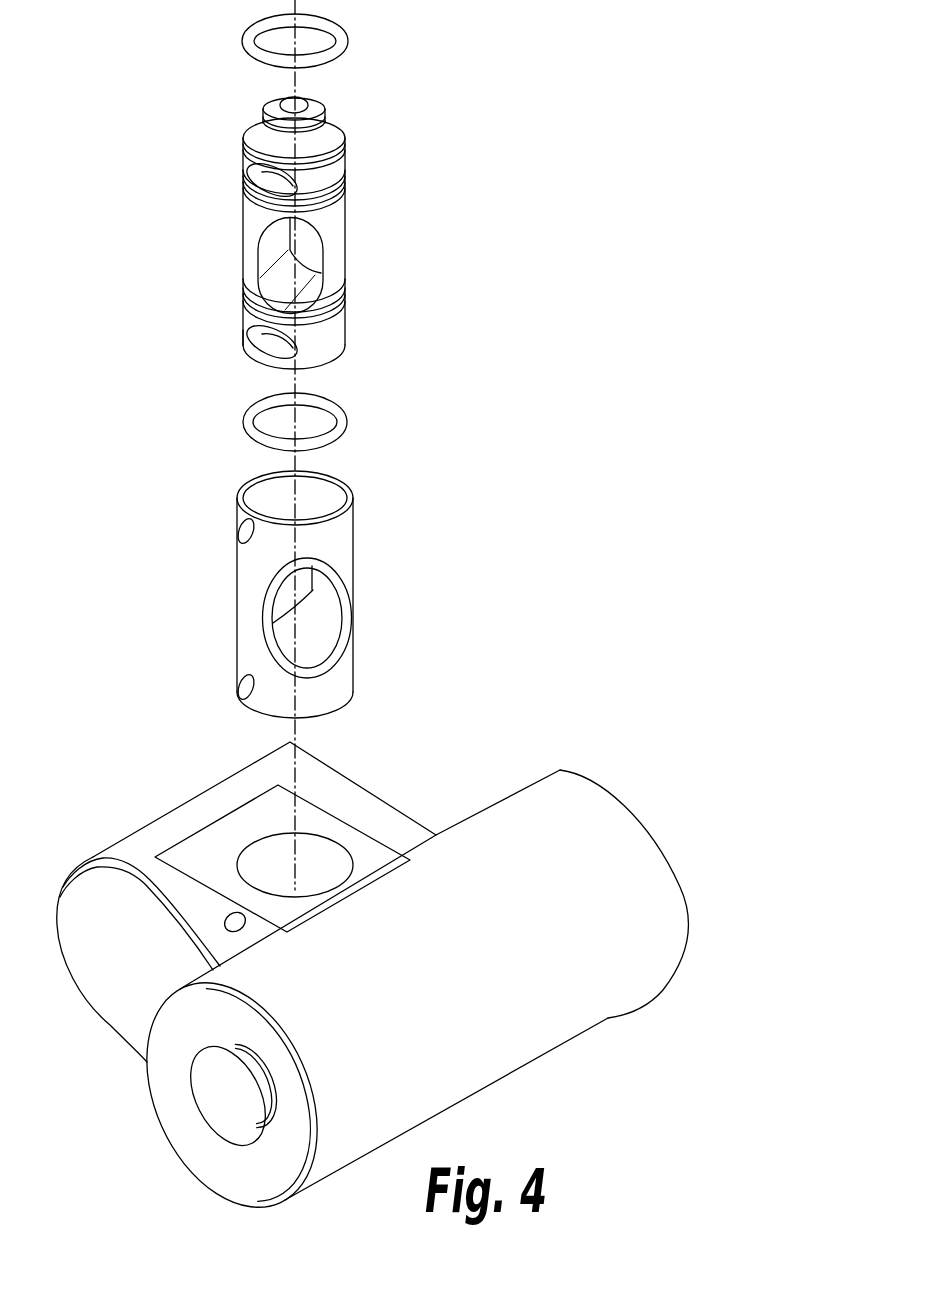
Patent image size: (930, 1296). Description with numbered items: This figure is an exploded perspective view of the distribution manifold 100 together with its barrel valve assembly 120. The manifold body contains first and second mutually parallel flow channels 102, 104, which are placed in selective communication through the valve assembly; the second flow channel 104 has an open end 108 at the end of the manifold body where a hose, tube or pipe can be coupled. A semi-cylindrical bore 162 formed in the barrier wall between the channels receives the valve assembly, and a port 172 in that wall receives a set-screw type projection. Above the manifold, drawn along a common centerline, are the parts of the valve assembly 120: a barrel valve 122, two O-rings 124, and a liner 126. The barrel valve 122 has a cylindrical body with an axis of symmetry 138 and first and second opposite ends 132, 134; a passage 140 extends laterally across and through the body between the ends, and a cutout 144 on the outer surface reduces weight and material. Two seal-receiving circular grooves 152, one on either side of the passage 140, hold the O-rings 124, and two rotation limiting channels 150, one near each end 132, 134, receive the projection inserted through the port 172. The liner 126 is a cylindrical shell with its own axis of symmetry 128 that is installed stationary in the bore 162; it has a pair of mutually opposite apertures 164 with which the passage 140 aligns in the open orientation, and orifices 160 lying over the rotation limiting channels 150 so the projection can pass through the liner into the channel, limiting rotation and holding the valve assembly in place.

The distribution manifold 100 is at (635, 790).
The first flow channel 102 is at (160, 817).
The second flow channel 104 is at (549, 1053).
The open end 108 is at (221, 1114).
The barrel valve assembly 120 is at (483, 0).
The barrel valve 122 is at (352, 338).
The O-ring 124 is at (348, 42).
The liner 126 is at (353, 538).
The axis of symmetry of the liner 128 is at (295, 494).
The first end of the body 132 is at (245, 350).
The second end of the body 134 is at (263, 109).
The axis of symmetry 138 is at (303, 390).
The passage 140 is at (303, 258).
The cutout 144 is at (252, 244).
The rotation limiting channel 150 is at (275, 184).
The seal-receiving circular groove 152 is at (337, 199).
The orifice 160 is at (240, 529).
The semi-cylindrical bore 162 is at (435, 838).
The aperture 164 is at (317, 590).
The port 172 is at (224, 923).